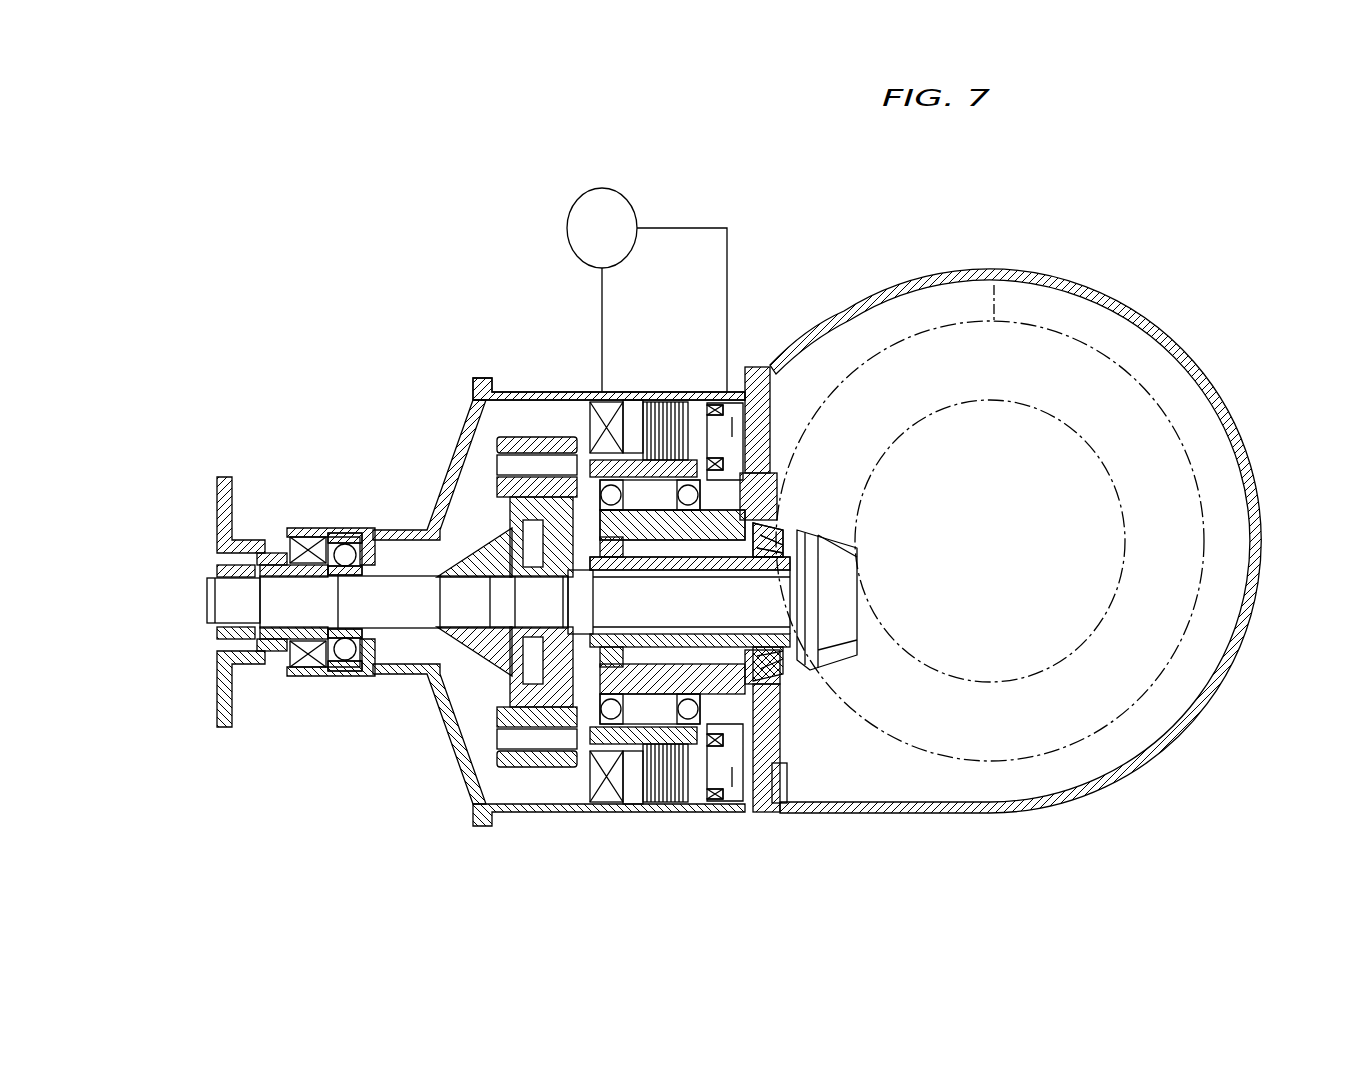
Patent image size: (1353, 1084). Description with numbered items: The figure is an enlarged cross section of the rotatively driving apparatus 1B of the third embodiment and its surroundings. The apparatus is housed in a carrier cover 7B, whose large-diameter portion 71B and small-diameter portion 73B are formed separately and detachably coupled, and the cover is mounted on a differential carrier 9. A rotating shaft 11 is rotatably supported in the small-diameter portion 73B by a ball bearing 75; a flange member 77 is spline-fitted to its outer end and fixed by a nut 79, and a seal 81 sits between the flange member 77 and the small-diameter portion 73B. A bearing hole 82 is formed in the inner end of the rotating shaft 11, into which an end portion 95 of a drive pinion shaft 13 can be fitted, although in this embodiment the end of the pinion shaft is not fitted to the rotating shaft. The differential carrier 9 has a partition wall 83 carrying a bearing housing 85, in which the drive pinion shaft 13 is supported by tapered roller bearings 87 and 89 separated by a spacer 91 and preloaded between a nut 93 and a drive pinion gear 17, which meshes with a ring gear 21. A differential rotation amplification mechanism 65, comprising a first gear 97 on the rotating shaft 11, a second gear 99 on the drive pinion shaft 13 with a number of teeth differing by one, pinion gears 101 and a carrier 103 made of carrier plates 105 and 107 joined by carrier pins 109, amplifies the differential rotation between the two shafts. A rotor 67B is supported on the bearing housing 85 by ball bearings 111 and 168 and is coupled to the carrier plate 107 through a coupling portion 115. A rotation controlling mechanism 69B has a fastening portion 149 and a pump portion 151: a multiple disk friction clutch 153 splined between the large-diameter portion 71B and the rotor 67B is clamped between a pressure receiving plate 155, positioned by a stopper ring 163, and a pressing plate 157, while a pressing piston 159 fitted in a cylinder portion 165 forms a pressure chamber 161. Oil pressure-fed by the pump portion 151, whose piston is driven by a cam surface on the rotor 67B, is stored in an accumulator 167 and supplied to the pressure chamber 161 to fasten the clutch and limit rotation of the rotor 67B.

The motor drive unit 1B is at (704, 211).
The carrier cover 7B is at (453, 443).
The differential carrier 9 is at (1098, 290).
The rotating shaft 11 is at (404, 585).
The drive pinion shaft 13 is at (774, 519).
The drive pinion gear 17 is at (838, 545).
The ring gear 21 is at (998, 272).
The differential rotation amplification mechanism 65 is at (472, 392).
The rotor 67B is at (665, 515).
The rotation controlling mechanism 69B is at (577, 298).
The large-diameter portion 71B is at (520, 497).
The small-diameter portion 73B is at (360, 530).
The ball bearing 75 is at (338, 533).
The flange member 77 is at (222, 478).
The nut 79 is at (218, 568).
The seal 81 is at (295, 537).
The bearing hole 82 is at (465, 640).
The partition wall 83 is at (780, 800).
The bearing housing 85 is at (783, 707).
The tapered roller bearing 87 is at (622, 570).
The tapered roller bearing 89 is at (765, 557).
The spacer 91 is at (690, 540).
The nut 93 is at (605, 557).
The end portion 95 is at (463, 675).
The first gear 97 is at (508, 508).
The second gear 99 is at (515, 437).
The pinion gears 101 is at (498, 455).
The carrier 103 is at (505, 760).
The carrier plate 105 is at (513, 727).
The carrier plate 107 is at (573, 707).
The carrier pins 109 is at (542, 740).
The ball bearing 111 is at (650, 570).
The coupling portion 115 is at (600, 760).
The fastening portion 149 is at (660, 392).
The pump portion 151 is at (600, 392).
The multiple disk friction clutch 153 is at (674, 402).
The pressure receiving plate 155 is at (624, 402).
The pressing plate 157 is at (697, 402).
The pressing piston 159 is at (722, 392).
The pressure chamber 161 is at (735, 400).
The stopper ring 163 is at (562, 477).
The cylinder portion 165 is at (762, 395).
The accumulator 167 is at (597, 213).
The ball bearing 168 is at (737, 563).